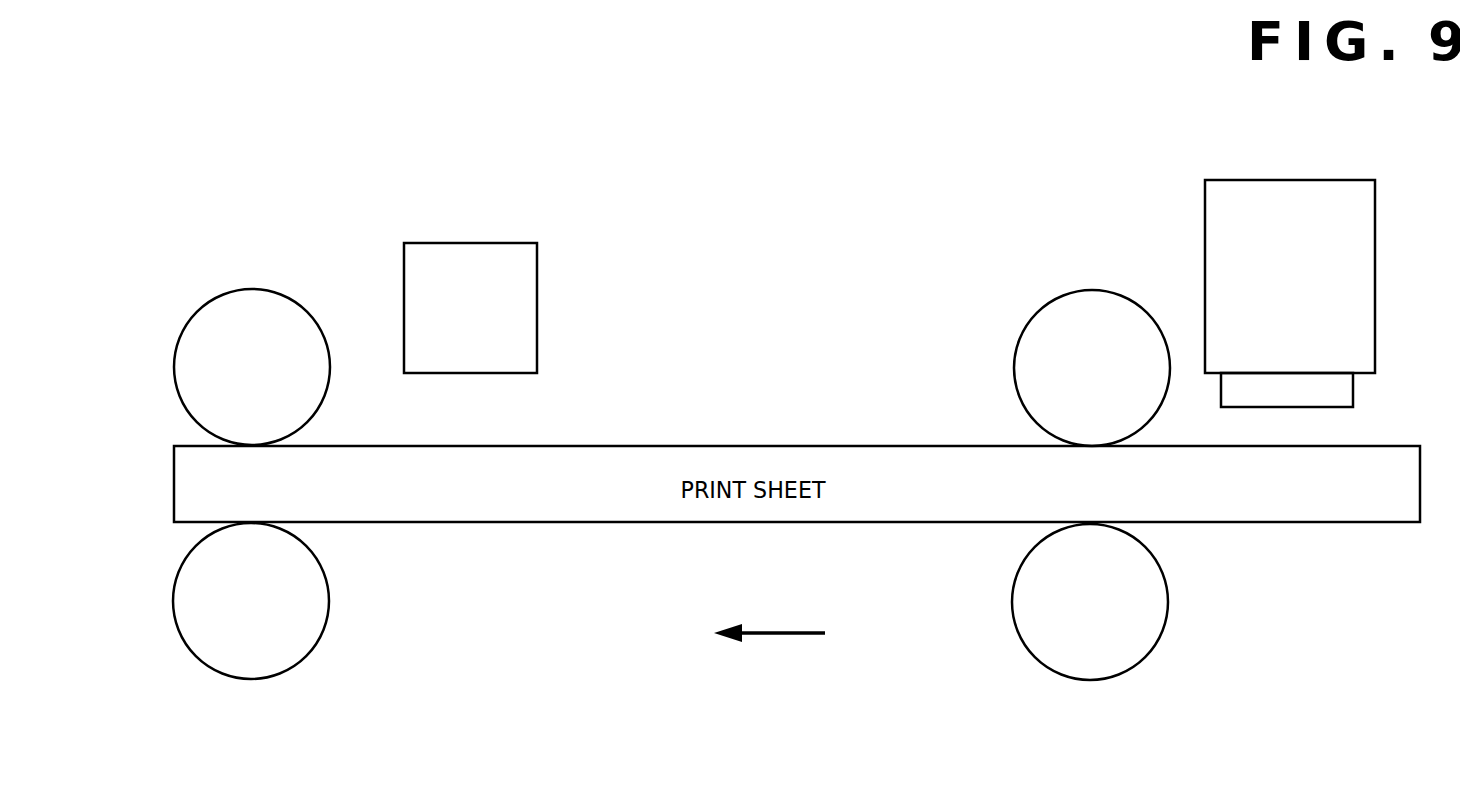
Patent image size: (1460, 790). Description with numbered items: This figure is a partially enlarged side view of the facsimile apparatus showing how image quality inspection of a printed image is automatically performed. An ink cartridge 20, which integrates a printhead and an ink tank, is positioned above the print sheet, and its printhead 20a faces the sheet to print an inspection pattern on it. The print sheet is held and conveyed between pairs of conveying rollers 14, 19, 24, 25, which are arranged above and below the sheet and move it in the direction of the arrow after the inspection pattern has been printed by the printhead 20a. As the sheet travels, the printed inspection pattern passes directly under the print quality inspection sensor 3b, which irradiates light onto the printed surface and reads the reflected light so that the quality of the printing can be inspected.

The print quality inspection sensor 3b is at (452, 243).
The conveying roller 14 is at (190, 320).
The conveying roller 19 is at (174, 596).
The ink cartridge 20 is at (1375, 218).
The printhead 20a is at (1354, 393).
The conveying roller 24 is at (1017, 350).
The conveying roller 25 is at (1013, 627).